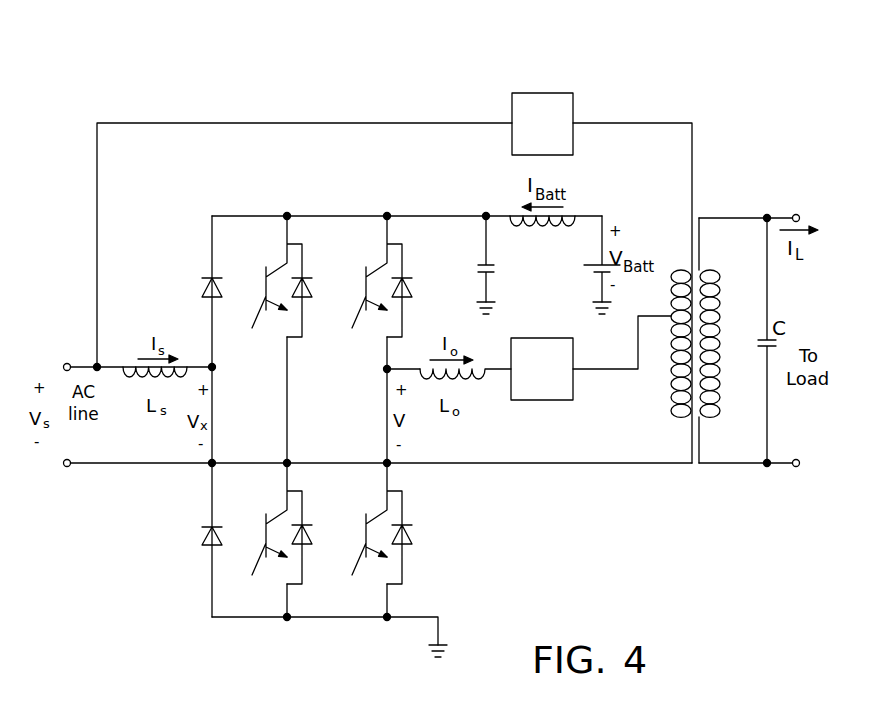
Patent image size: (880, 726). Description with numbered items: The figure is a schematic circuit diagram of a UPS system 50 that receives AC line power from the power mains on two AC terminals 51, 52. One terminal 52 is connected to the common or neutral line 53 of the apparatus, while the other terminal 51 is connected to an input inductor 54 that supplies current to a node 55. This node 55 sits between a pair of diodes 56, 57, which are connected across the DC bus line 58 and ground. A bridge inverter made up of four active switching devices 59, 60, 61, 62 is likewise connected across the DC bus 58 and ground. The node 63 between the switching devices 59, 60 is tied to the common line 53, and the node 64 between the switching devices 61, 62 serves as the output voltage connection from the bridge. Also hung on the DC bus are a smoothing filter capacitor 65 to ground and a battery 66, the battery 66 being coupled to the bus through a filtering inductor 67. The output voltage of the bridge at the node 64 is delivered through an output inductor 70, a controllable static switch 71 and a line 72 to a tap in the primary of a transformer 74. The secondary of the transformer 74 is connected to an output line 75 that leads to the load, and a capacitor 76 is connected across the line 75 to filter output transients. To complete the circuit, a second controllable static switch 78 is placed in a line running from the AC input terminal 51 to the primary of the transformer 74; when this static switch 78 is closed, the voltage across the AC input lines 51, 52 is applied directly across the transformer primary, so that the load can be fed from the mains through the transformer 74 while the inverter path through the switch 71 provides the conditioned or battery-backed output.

The UPS system 50 is at (251, 118).
The AC terminal 51 is at (64, 361).
The AC terminal 52 is at (65, 467).
The common line 53 is at (127, 465).
The input inductor 54 is at (140, 386).
The node 55 is at (214, 372).
The diode 56 is at (200, 278).
The diode 57 is at (205, 547).
The DC bus line 58 is at (326, 214).
The active switching device 59 is at (272, 288).
The active switching device 60 is at (272, 534).
The active switching device 61 is at (371, 290).
The active switching device 62 is at (372, 534).
The node 63 is at (290, 460).
The node 64 is at (384, 372).
The smoothing filter capacitor 65 is at (482, 261).
The battery 66 is at (595, 273).
The filtering inductor 67 is at (560, 238).
The output inductor 70 is at (478, 386).
The controllable static switch 71 is at (548, 401).
The line 72 is at (612, 371).
The transformer 74 is at (713, 270).
The output line 75 is at (780, 214).
The capacitor 76 is at (765, 348).
The controllable static switch 78 is at (553, 92).